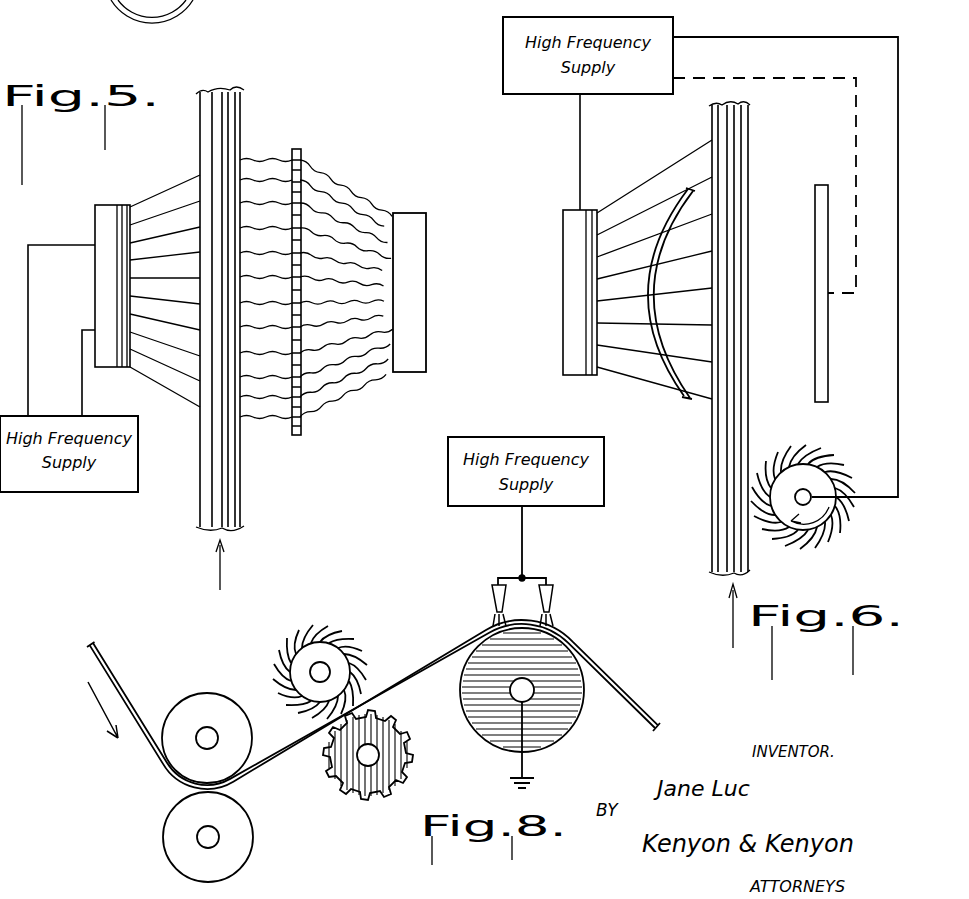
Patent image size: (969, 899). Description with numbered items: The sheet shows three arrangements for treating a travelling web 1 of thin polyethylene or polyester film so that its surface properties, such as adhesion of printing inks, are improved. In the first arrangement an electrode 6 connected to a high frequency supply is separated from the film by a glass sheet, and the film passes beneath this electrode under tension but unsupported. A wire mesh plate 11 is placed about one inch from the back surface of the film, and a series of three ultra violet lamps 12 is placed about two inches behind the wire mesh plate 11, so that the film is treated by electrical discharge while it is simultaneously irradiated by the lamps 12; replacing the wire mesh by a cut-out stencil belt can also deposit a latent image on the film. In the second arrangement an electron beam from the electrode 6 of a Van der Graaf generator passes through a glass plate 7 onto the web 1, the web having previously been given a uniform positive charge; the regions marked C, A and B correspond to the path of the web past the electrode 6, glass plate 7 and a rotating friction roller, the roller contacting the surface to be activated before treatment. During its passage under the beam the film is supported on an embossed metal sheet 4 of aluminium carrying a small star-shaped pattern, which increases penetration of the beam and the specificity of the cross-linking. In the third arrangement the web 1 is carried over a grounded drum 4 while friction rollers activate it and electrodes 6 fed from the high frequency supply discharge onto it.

In FIG. 5, the web 1 is at (240, 480).
In FIG. 6, the web 1 is at (725, 512).
In FIG. 8, the web 1 is at (121, 692).
In FIG. 6, the embossed metal sheet 4 is at (822, 196).
In FIG. 8, the embossed metal sheet 4 is at (563, 733).
In FIG. 5, the electrode 6 is at (103, 205).
In FIG. 6, the electrode 6 is at (563, 340).
In FIG. 8, the electrode 6 is at (492, 592).
In FIG. 6, the glass plate 7 is at (677, 193).
In FIG. 5, the wire mesh plate 11 is at (301, 151).
In FIG. 5, the ultra violet lamps 12 is at (422, 220).
In FIG. 6, the zone A is at (768, 292).
In FIG. 6, the brush B is at (803, 515).
In FIG. 6, the zone C is at (778, 138).